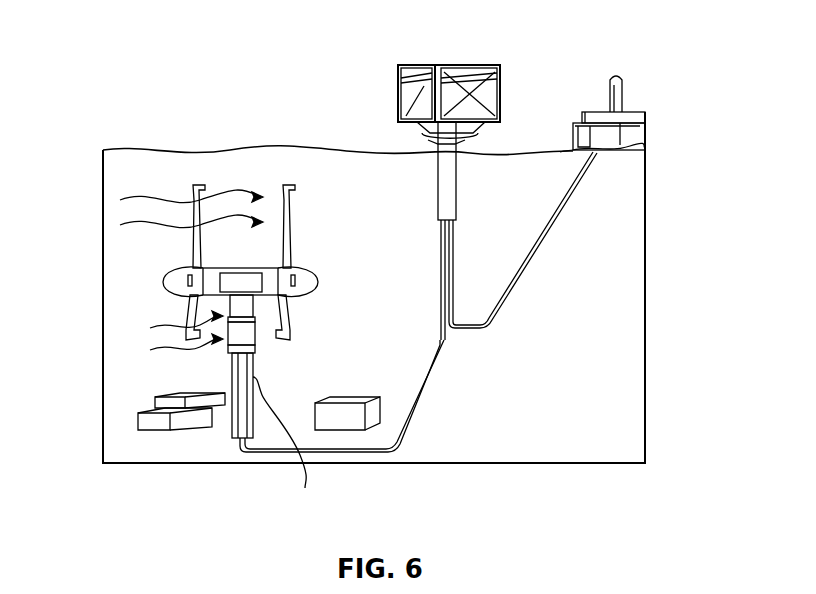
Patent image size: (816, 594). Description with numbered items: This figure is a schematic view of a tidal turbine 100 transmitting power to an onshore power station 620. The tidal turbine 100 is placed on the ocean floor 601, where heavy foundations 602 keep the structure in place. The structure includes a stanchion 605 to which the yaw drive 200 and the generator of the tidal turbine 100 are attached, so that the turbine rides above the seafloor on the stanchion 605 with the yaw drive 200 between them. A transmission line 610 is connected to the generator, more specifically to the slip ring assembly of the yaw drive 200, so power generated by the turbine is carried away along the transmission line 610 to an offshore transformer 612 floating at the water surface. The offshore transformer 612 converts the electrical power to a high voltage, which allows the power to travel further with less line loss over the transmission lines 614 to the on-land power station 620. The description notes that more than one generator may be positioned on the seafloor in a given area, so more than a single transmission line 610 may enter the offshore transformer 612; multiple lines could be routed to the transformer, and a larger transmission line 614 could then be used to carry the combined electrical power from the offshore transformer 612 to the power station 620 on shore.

The tidal turbine 100 is at (165, 283).
The yaw drive 200 is at (242, 333).
The ocean floor 601 is at (140, 418).
The heavy foundations 602 is at (183, 430).
The stanchion 605 is at (291, 442).
The transmission line 610 is at (419, 398).
The offshore transformer 612 is at (452, 62).
The transmission lines 614 is at (545, 258).
The onshore power station 620 is at (622, 90).